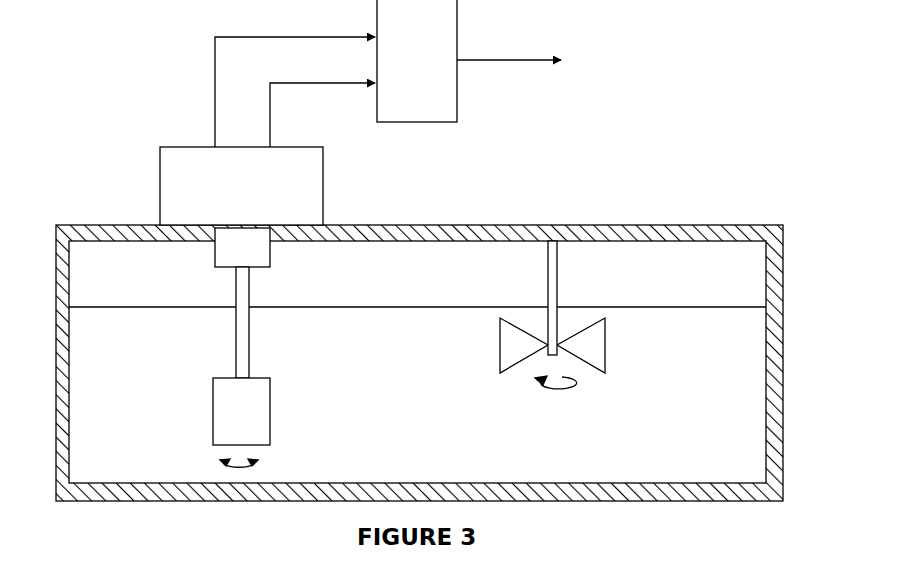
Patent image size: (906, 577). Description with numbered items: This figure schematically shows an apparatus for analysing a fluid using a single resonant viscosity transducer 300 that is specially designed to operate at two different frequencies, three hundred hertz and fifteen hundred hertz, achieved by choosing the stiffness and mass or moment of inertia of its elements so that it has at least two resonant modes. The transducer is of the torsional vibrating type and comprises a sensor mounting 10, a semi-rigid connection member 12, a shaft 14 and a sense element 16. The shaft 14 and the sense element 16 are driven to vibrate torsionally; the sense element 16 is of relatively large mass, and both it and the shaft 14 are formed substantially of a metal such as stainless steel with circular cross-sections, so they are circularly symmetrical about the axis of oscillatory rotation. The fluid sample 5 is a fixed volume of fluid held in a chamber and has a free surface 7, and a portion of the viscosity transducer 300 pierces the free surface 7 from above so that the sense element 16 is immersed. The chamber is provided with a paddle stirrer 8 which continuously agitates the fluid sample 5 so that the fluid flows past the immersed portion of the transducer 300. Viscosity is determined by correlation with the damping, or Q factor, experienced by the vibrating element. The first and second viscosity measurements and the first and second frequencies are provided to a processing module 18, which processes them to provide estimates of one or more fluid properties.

The resonant viscosity transducer 300 is at (131, 178).
The fluid sample 5 is at (722, 436).
The free surface 7 is at (103, 307).
The paddle stirrer 8 is at (605, 343).
The sensor mounting 10 is at (323, 177).
The semi-rigid connection member 12 is at (270, 258).
The shaft 14 is at (249, 327).
The sense element 16 is at (270, 420).
The processing module 18 is at (430, 56).